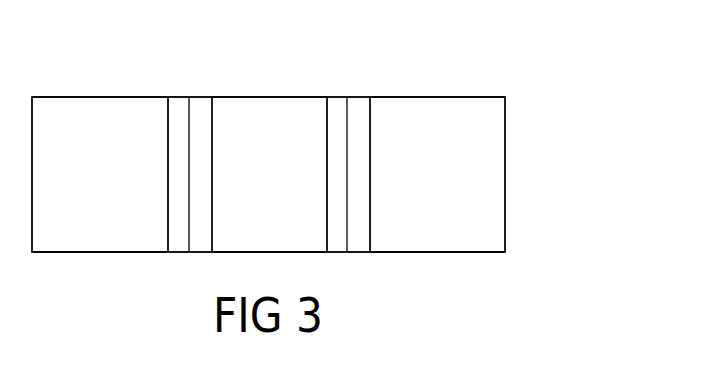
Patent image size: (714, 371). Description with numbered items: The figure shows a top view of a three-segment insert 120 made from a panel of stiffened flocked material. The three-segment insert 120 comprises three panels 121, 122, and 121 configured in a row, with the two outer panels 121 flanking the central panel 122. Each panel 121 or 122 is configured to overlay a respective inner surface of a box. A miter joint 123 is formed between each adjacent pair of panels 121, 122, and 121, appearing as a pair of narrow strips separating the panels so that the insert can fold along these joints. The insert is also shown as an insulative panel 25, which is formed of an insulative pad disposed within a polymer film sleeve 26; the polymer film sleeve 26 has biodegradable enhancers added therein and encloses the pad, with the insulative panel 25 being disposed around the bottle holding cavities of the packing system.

The three-segment insert 120 is at (462, 77).
The panel 121 is at (122, 188).
The panel 122 is at (288, 188).
The miter joint 123 is at (202, 112).
The insulative panel 25 is at (495, 137).
The polymer film sleeve 26 is at (492, 206).